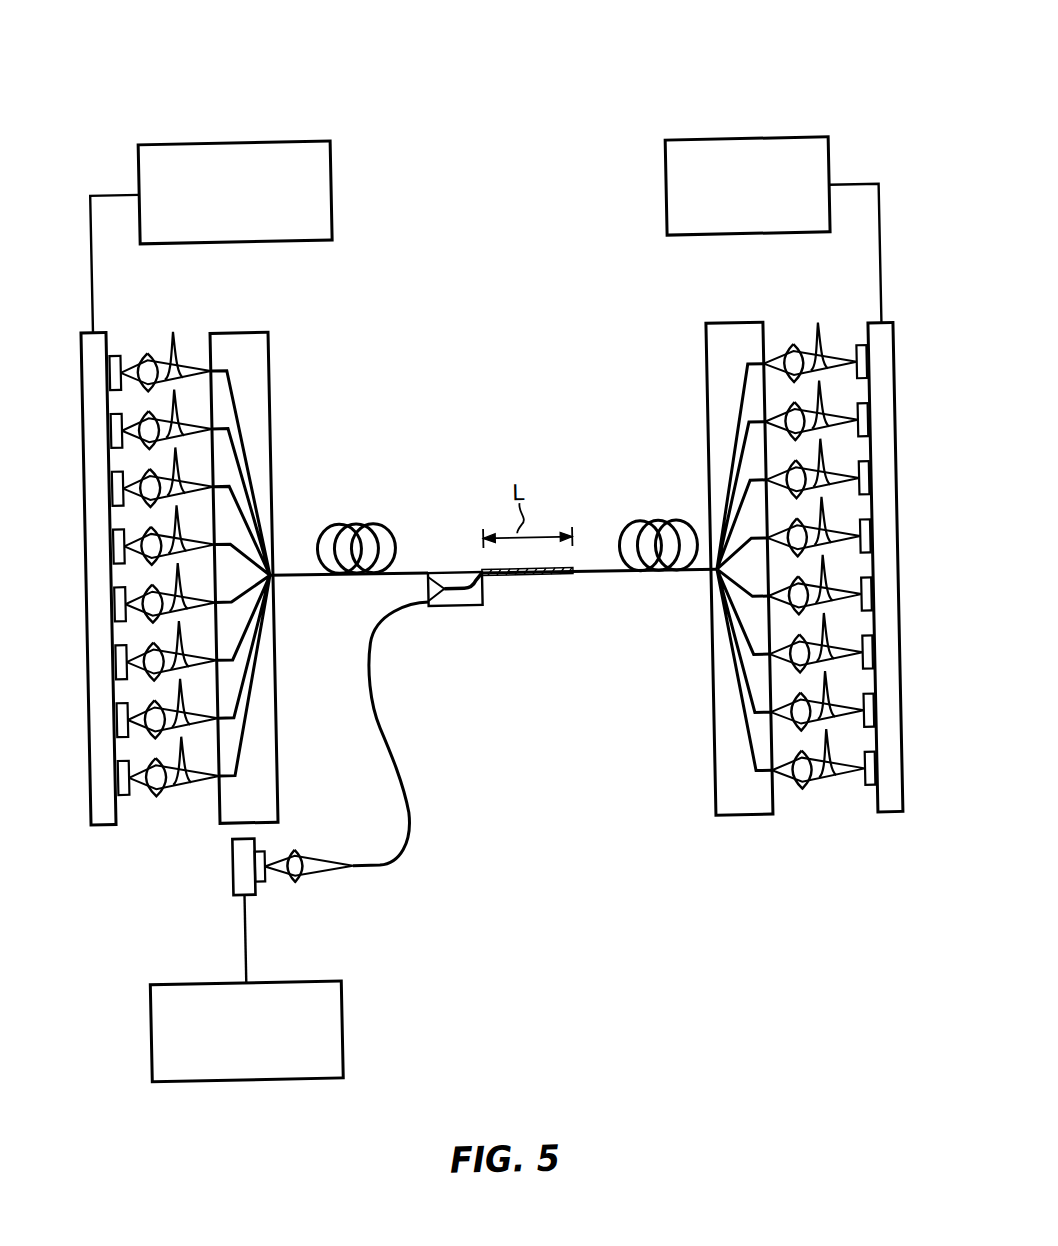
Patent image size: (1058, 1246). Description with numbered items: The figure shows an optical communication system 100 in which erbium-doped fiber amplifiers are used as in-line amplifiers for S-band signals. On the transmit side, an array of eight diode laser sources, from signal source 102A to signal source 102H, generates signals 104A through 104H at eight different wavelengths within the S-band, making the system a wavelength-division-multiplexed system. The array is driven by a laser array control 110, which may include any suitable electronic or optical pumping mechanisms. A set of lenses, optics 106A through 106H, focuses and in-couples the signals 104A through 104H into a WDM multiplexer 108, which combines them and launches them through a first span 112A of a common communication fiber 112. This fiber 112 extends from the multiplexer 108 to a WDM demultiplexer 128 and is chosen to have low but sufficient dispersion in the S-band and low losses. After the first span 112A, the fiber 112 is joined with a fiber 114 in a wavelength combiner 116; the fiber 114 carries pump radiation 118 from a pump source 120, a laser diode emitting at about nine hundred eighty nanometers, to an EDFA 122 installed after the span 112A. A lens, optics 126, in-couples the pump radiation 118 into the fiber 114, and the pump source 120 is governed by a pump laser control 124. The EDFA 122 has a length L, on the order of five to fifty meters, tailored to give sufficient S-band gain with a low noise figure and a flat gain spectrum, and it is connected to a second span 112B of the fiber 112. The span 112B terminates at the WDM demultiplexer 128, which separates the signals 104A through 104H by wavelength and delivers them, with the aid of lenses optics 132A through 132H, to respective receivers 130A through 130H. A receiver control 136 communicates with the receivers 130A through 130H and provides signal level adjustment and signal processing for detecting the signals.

The optical communication system 100 is at (579, 71).
The signal source 102A is at (126, 332).
The signal source 102H is at (132, 794).
The signal 104A is at (184, 338).
The signal 104H is at (196, 755).
The optics 106A is at (159, 340).
The optics 106H is at (160, 790).
The WDM multiplexer 108 is at (283, 358).
The laser array control 110 is at (341, 184).
The communication fiber 112 is at (491, 482).
The first span 112A is at (342, 516).
The second span 112B is at (624, 522).
The fiber 114 is at (385, 742).
The wavelength combiner 116 is at (468, 604).
The pump radiation 118 is at (295, 850).
The pump source 120 is at (257, 877).
The EDFA 122 is at (531, 578).
The pump laser control 124 is at (335, 1001).
The optics 126 is at (295, 875).
The WDM demultiplexer 128 is at (706, 746).
The receiver 130A is at (866, 347).
The receiver 130H is at (869, 794).
The optics 132A is at (799, 342).
The optics 132H is at (794, 791).
The receiver control 136 is at (675, 180).